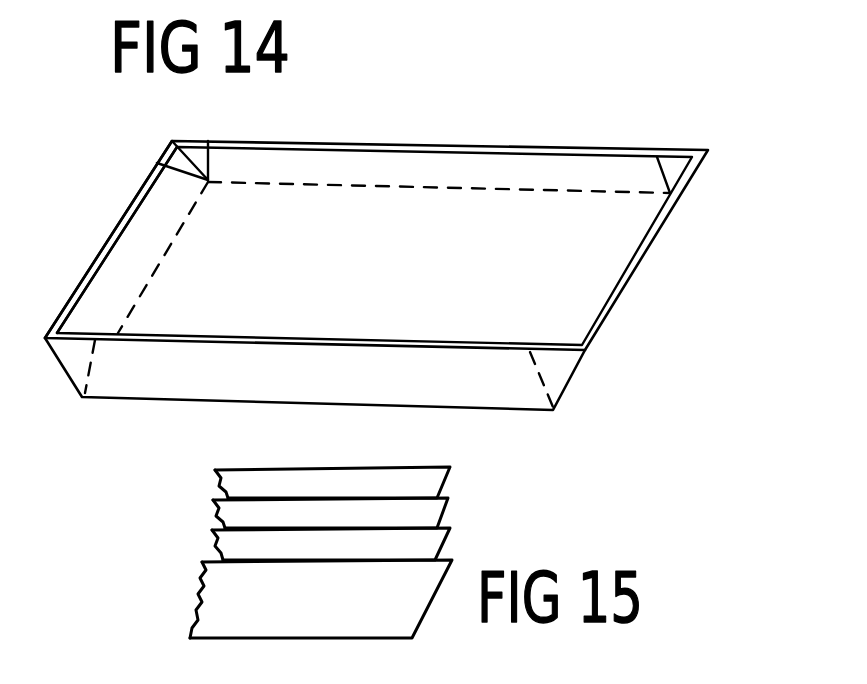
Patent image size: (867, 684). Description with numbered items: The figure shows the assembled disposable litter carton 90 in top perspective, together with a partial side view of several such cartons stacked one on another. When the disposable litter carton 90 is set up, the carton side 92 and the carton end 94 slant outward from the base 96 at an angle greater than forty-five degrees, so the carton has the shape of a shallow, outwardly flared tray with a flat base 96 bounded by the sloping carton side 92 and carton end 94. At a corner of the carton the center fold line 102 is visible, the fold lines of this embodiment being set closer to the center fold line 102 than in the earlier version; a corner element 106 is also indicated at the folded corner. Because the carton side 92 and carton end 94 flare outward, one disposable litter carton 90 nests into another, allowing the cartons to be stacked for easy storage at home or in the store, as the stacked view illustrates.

In FIG. 14, the disposable litter carton 90 is at (515, 127).
In FIG. 15, the disposable litter carton 90 is at (437, 480).
In FIG. 14, the carton side 92 is at (415, 157).
In FIG. 14, the carton end 94 is at (127, 252).
In FIG. 14, the base 96 is at (377, 294).
In FIG. 14, the center fold line 102 is at (187, 97).
In FIG. 14, the corner tab 106 is at (200, 147).